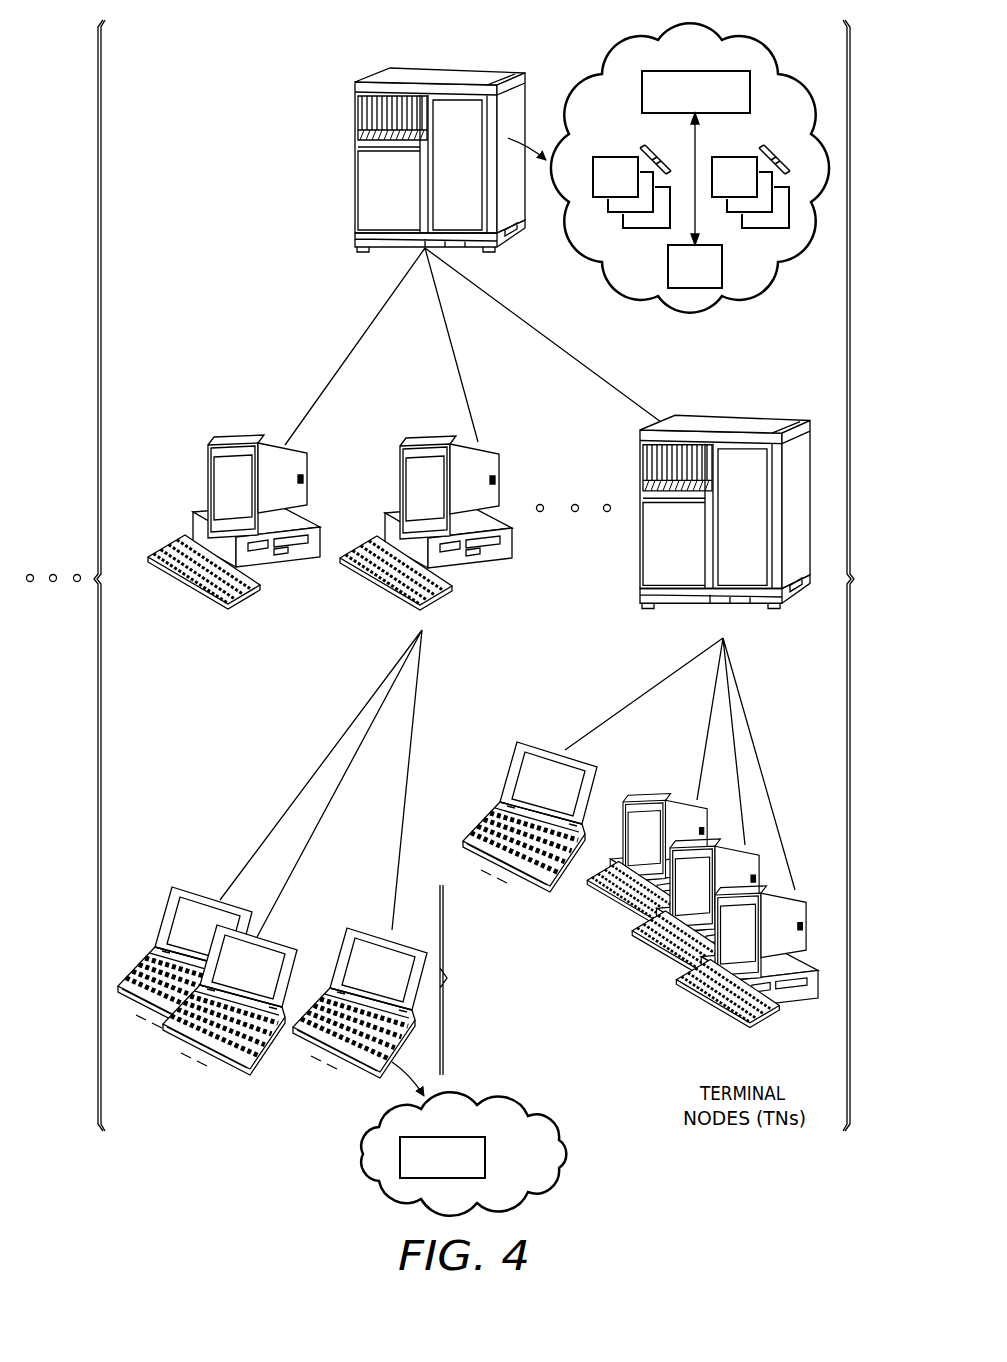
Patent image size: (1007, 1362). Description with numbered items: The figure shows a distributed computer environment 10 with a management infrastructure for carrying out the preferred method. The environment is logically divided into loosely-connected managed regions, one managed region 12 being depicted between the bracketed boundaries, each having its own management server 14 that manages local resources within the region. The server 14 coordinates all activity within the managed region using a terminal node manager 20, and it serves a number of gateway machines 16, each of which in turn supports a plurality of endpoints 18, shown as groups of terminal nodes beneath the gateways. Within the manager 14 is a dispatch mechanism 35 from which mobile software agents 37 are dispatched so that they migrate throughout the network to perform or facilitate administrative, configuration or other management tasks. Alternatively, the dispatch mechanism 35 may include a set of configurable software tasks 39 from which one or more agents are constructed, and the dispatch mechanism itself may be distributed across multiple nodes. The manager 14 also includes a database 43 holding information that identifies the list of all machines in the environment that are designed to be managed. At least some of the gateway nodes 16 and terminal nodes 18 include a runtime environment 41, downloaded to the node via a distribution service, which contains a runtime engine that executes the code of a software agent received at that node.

The distributed computer environment 10 is at (213, 790).
The managed region 12 is at (866, 247).
The management server 14 is at (355, 188).
The gateway machine 16 is at (208, 465).
The endpoint 18 is at (297, 1007).
The terminal node manager 20 is at (316, 70).
The dispatch mechanism 35 is at (642, 90).
The software agents 37 is at (652, 158).
The configurable software tasks 39 is at (772, 158).
The runtime environment 41 is at (485, 1158).
The database 43 is at (722, 266).